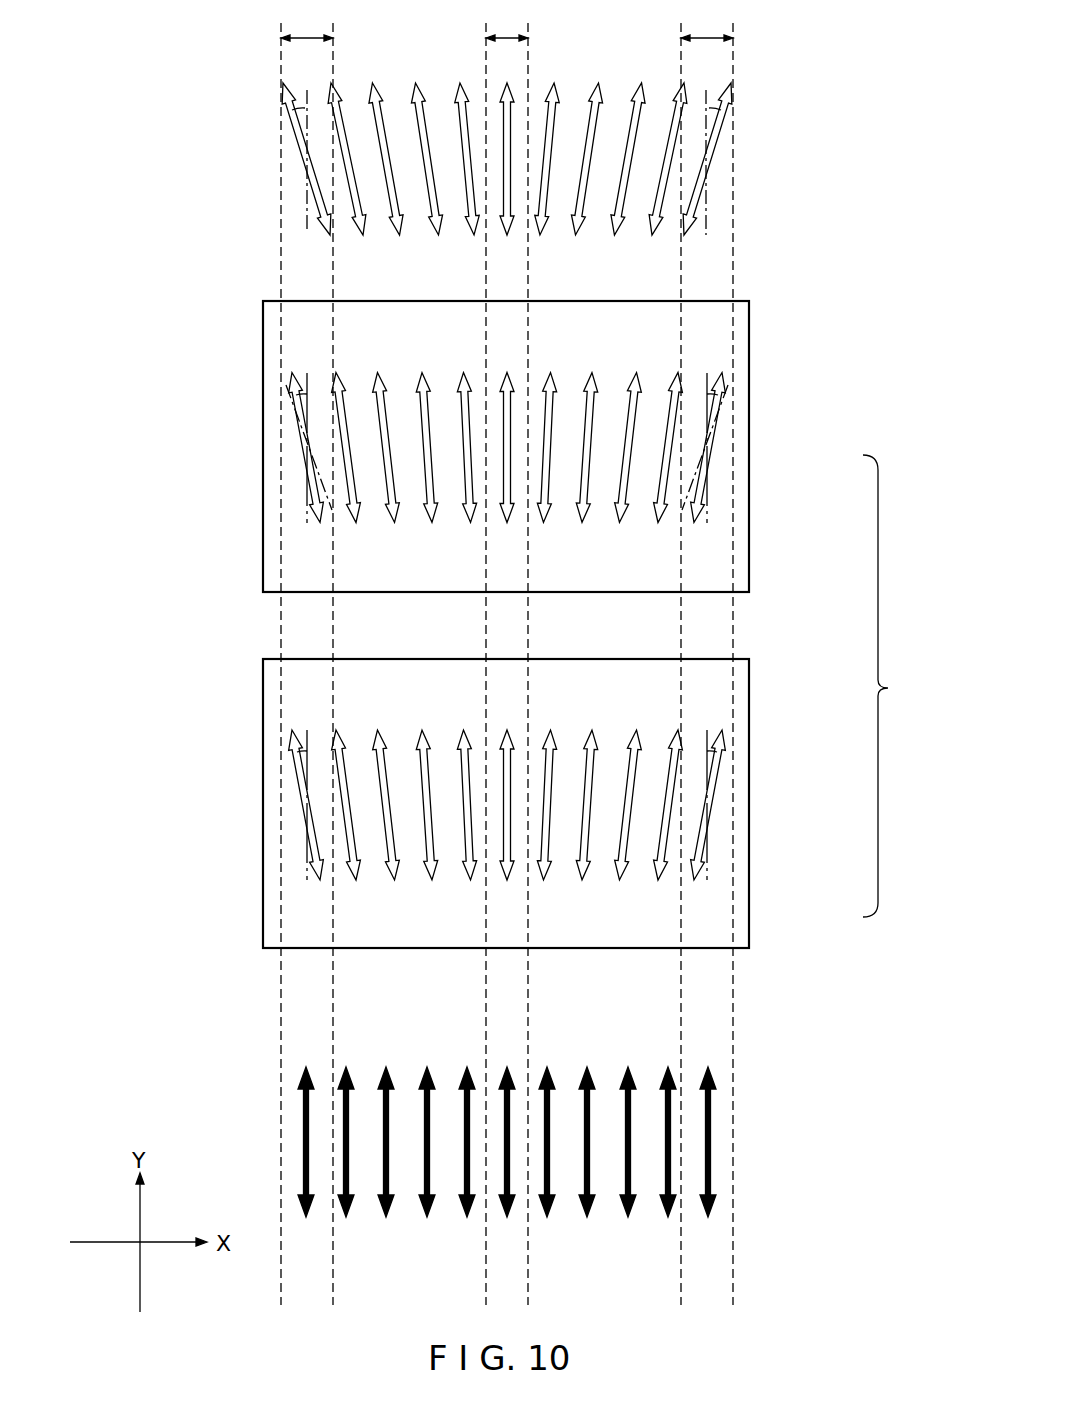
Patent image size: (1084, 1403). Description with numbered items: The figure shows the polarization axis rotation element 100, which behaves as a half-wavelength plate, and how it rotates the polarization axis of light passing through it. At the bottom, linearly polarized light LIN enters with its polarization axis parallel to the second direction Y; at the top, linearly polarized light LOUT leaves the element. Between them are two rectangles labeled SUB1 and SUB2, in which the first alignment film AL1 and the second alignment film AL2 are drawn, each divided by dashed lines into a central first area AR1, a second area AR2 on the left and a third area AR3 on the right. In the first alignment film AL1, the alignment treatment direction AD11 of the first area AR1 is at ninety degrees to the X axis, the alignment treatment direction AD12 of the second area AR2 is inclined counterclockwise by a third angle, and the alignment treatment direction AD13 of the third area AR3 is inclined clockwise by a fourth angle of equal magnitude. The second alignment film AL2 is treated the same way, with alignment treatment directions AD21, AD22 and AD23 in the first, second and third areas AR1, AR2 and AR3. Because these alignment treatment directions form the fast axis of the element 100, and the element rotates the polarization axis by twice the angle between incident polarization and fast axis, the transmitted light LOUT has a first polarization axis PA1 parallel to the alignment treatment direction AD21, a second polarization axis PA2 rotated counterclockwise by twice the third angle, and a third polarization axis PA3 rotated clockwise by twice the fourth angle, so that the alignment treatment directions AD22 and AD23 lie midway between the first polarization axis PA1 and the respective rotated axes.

The first area AR1 is at (508, 652).
The second area AR2 is at (307, 652).
The third area AR3 is at (707, 652).
The first polarization axis PA1 is at (511, 114).
The second polarization axis PA2 is at (283, 112).
The third polarization axis PA3 is at (729, 116).
The linearly polarized light transmitted through the element LOUT is at (613, 197).
The linearly polarized light incident on the element LIN is at (711, 1140).
The first substrate SUB1 is at (754, 848).
The second substrate SUB2 is at (752, 493).
The first alignment film AL1 is at (743, 898).
The second alignment film AL2 is at (743, 545).
The alignment treatment direction of the first area in the first alignment film AD11 is at (503, 760).
The alignment treatment direction of the second area in the first alignment film AD12 is at (290, 756).
The alignment treatment direction of the third area in the first alignment film AD13 is at (715, 752).
The alignment treatment direction of the first area in the second alignment film AD21 is at (505, 402).
The alignment treatment direction of the second area in the second alignment film AD22 is at (292, 378).
The alignment treatment direction of the third area in the second alignment film AD23 is at (718, 380).
The polarization axis rotation element 100 is at (899, 686).